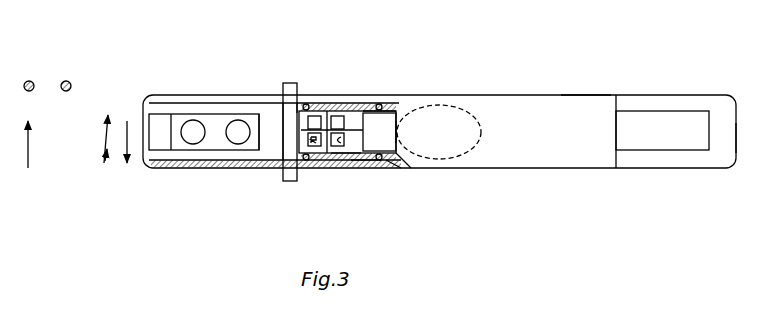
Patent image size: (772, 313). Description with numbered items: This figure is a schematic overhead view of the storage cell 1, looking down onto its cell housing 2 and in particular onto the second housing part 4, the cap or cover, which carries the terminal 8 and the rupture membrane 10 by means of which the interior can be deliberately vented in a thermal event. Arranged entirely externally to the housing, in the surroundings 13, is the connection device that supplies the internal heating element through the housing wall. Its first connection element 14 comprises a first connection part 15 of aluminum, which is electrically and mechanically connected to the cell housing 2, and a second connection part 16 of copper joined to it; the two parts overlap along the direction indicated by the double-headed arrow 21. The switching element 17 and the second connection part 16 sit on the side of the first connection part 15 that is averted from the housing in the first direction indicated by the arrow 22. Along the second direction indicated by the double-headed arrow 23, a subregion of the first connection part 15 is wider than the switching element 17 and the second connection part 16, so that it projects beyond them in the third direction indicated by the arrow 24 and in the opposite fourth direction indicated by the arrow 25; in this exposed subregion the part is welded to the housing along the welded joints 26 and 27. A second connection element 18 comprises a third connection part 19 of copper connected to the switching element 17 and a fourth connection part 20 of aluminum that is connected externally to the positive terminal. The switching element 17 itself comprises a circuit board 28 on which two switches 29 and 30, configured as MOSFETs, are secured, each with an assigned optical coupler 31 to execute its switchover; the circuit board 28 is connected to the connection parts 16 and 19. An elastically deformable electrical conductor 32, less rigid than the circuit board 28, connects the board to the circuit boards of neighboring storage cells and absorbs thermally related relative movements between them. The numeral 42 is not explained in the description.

The storage cell 1 is at (694, 77).
The cell housing 2 is at (734, 102).
The second housing part 4 is at (722, 141).
The terminal 8 is at (663, 113).
The rupture membrane 10 is at (480, 128).
The surroundings 13 is at (588, 55).
The first connection element 14 is at (398, 128).
The first connection part 15 is at (362, 165).
The second connection part 16 is at (386, 106).
The switching element 17 is at (349, 138).
The second connection element 18 is at (260, 153).
The third connection part 19 is at (284, 178).
The fourth connection part 20 is at (222, 148).
The double-headed arrow 21 is at (71, 80).
The arrow 22 is at (28, 77).
The double-headed arrow 23 is at (103, 152).
The arrow 24 is at (28, 160).
The arrow 25 is at (128, 160).
The welded joint 26 is at (345, 163).
The welded joint 27 is at (326, 104).
The circuit board 28 is at (400, 158).
The switch 29 is at (280, 103).
The switch 30 is at (356, 99).
The optical coupler 31 is at (318, 162).
The elastically deformable electrical conductor 32 is at (284, 80).
The connector 42 is at (396, 162).